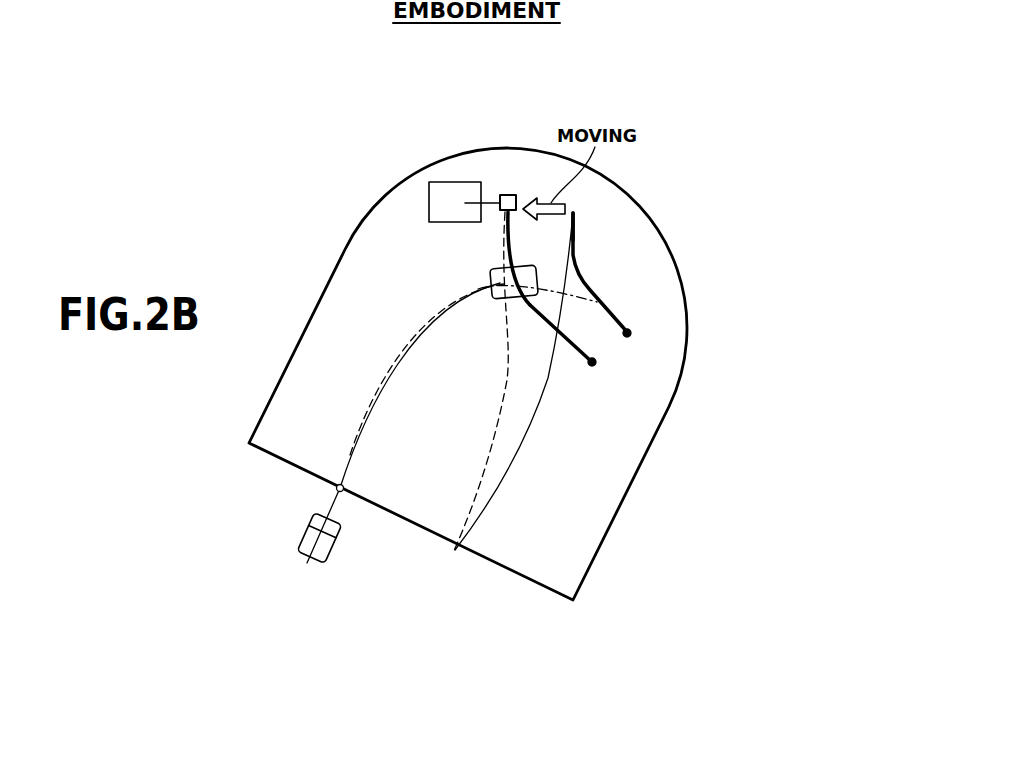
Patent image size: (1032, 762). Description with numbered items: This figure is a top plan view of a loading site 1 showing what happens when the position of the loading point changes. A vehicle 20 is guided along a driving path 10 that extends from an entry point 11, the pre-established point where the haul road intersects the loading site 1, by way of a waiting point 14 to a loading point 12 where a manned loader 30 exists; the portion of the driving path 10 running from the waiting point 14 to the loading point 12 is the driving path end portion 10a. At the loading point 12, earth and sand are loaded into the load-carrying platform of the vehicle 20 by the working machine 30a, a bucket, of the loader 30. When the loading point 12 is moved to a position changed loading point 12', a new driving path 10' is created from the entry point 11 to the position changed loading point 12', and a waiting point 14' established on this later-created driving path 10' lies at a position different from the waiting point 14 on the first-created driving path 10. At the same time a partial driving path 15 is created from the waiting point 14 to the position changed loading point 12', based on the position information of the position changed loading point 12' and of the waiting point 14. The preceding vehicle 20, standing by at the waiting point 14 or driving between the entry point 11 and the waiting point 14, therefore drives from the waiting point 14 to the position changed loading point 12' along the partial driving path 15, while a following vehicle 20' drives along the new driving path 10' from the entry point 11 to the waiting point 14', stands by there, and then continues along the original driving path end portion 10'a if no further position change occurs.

The loading site 1 is at (699, 286).
The driving path 10 is at (452, 419).
The new driving path 10' is at (360, 382).
The driving path end portion 10a is at (517, 247).
The original driving path end portion 10'a is at (710, 366).
The entry point 11 is at (336, 488).
The loading point 12 is at (729, 168).
The position changed loading point 12' is at (514, 131).
The waiting point 14 is at (755, 343).
The waiting point 14' is at (732, 413).
The partial driving path 15 is at (576, 258).
The vehicle 20 is at (397, 237).
The following vehicle 20' is at (301, 562).
The loader 30 is at (443, 182).
The working machine 30a is at (503, 194).